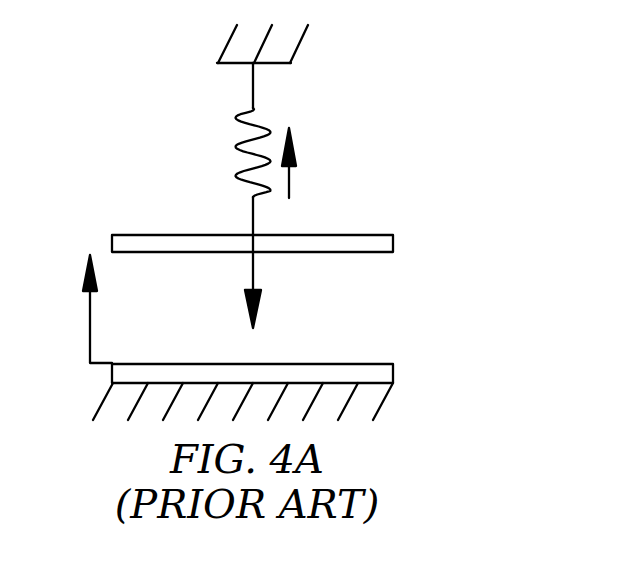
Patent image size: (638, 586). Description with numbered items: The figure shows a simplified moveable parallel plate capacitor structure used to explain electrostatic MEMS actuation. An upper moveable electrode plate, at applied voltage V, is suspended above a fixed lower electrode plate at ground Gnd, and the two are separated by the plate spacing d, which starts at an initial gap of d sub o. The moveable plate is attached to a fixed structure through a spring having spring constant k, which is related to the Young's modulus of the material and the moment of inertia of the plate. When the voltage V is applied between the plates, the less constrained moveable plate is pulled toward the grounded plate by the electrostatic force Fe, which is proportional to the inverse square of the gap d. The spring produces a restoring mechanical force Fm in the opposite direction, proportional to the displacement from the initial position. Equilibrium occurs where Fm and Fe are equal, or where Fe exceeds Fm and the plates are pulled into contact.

The spring constant k is at (257, 111).
The restoring mechanical force Fm is at (312, 163).
The electrostatic force Fe is at (272, 267).
The applied voltage V is at (395, 252).
The ground Gnd is at (395, 364).
The plate spacing d is at (98, 255).